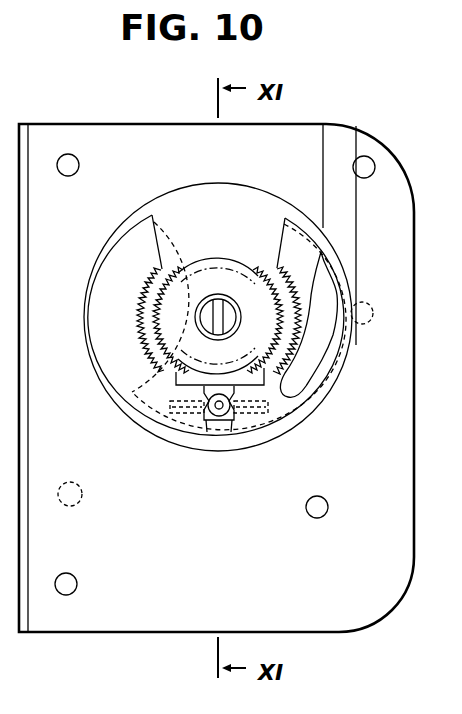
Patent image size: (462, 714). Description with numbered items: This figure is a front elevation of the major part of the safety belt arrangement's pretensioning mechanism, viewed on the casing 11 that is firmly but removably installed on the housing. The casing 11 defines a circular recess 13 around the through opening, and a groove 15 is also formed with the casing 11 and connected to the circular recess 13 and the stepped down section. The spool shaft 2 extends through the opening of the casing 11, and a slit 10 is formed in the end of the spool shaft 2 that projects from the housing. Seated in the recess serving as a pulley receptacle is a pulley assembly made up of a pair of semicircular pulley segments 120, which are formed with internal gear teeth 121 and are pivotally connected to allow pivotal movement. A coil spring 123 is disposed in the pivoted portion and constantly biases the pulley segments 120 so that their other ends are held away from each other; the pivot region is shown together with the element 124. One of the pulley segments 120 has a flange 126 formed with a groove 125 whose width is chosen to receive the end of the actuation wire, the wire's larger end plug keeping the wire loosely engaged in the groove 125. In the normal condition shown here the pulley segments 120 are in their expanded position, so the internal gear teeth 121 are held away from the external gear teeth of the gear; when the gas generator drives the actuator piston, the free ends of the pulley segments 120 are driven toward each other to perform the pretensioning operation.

The spool shaft 2 is at (233, 297).
The slit 10 is at (203, 323).
The casing 11 is at (394, 176).
The recess 13 is at (165, 205).
The groove 15 is at (336, 132).
The pulley segments 120 is at (313, 266).
The internal gear teeth 121 is at (168, 289).
The coil spring 123 is at (215, 423).
The pin 124 is at (217, 422).
The groove 125 is at (325, 312).
The flange 126 is at (340, 369).